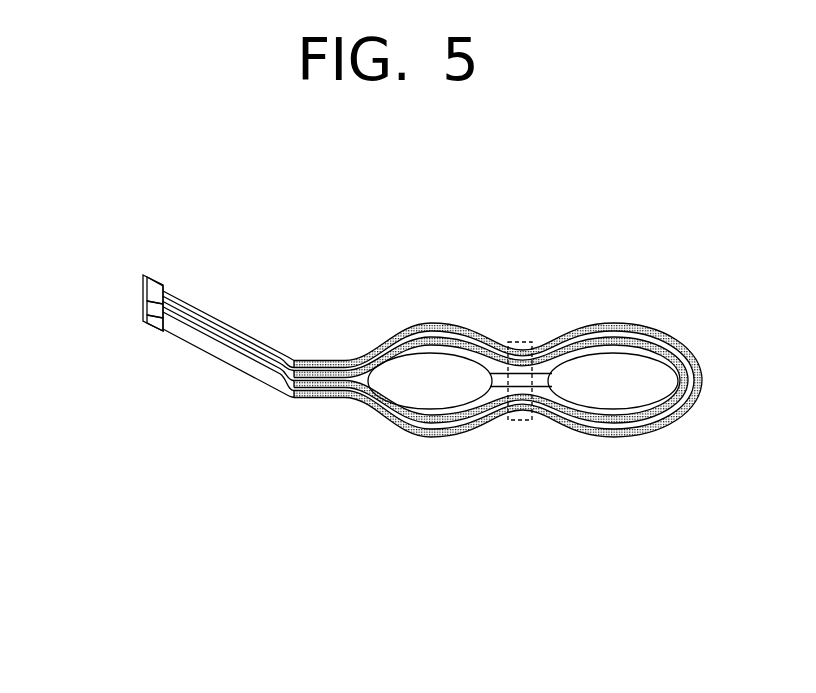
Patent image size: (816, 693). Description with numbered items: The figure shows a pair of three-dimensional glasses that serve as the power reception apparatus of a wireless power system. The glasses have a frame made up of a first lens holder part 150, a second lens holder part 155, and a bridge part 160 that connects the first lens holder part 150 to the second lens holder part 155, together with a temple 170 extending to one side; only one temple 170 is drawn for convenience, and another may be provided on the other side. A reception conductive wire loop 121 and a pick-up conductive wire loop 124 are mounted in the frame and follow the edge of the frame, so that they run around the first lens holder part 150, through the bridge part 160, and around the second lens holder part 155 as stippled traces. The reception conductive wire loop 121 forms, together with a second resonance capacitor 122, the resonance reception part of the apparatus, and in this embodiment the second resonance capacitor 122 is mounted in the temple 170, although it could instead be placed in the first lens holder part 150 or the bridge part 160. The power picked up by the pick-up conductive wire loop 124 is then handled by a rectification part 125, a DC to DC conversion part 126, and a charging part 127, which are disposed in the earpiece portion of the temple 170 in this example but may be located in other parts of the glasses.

The reception conductive wire loop 121 is at (431, 428).
The second resonance capacitor 122 is at (294, 398).
The pick-up conductive wire loop 124 is at (467, 431).
The rectification part 125 is at (151, 282).
The DC to DC conversion part 126 is at (152, 306).
The charging part 127 is at (152, 319).
The first lens holder part 150 is at (426, 322).
The second lens holder part 155 is at (600, 322).
The bridge part 160 is at (518, 422).
The temple 170 is at (212, 355).